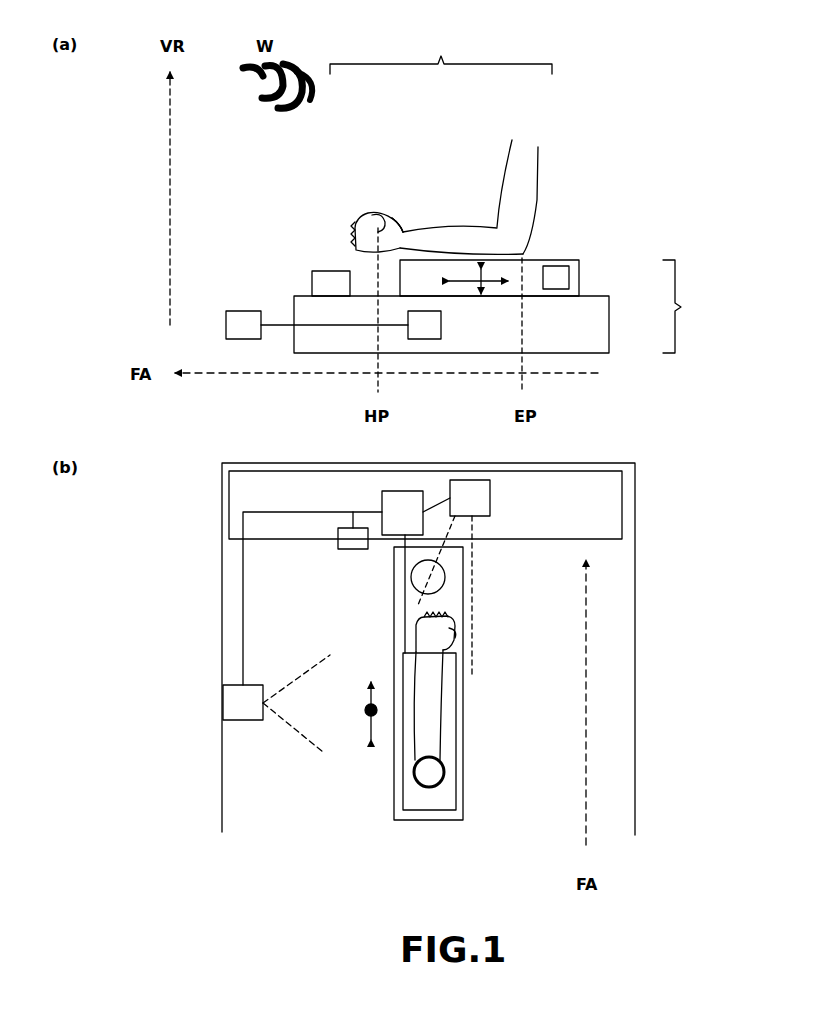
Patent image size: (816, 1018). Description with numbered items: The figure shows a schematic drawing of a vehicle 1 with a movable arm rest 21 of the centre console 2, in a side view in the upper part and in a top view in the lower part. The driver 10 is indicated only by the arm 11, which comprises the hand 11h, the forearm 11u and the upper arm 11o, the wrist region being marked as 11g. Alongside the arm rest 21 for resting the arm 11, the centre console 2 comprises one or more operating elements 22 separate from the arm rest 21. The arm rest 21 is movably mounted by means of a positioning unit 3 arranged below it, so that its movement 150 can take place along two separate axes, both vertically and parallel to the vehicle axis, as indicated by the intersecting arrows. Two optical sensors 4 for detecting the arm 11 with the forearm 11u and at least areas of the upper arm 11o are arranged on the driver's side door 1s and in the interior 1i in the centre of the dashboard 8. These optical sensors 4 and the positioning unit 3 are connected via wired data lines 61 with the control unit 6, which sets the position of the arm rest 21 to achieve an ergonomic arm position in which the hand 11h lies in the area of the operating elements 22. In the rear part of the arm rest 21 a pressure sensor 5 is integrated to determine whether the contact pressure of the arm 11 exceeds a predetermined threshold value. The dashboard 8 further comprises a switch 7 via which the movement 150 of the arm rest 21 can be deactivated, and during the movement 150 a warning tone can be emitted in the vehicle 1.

The vehicle 1 is at (674, 697).
The side door 1s is at (220, 752).
The interior 1i is at (262, 782).
The centre console 2 is at (338, 804).
The positioning unit 3 is at (425, 341).
The optical sensor 4 is at (356, 616).
The pressure sensor 5 is at (558, 260).
The control unit 6 is at (244, 309).
The switch 7 is at (353, 551).
The dashboard 8 is at (425, 505).
The driver 10 is at (572, 155).
The arm 11 is at (441, 124).
The hand 11h is at (376, 239).
The wrist joint 11g is at (407, 242).
The forearm 11u is at (458, 242).
The upper arm 11o is at (521, 175).
The arm rest 21 is at (330, 269).
The operating elements 22 is at (447, 577).
The data lines 61 is at (318, 327).
The movement 150 is at (494, 289).